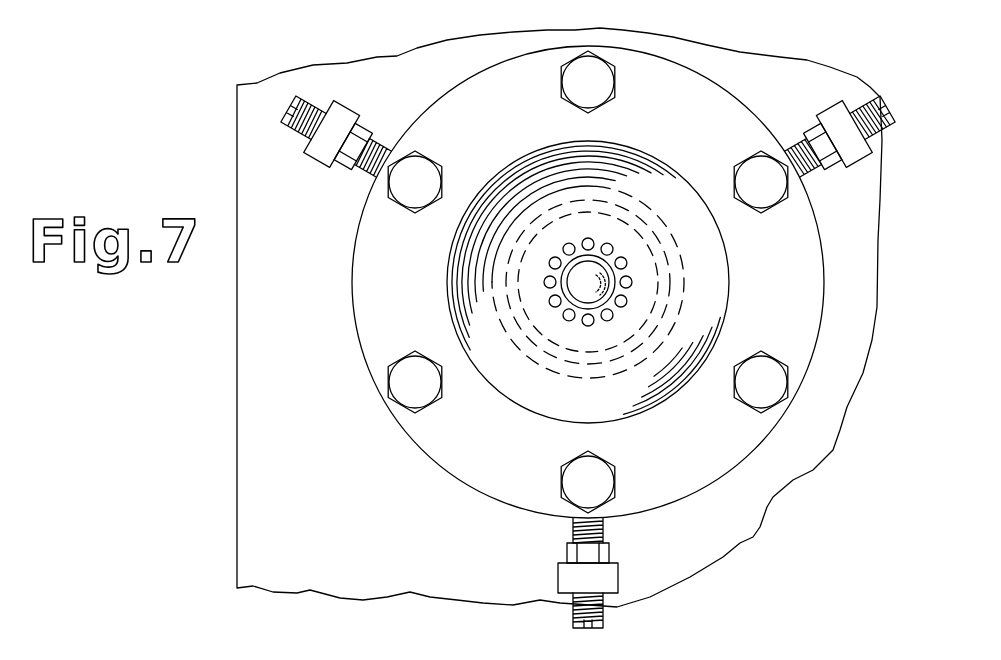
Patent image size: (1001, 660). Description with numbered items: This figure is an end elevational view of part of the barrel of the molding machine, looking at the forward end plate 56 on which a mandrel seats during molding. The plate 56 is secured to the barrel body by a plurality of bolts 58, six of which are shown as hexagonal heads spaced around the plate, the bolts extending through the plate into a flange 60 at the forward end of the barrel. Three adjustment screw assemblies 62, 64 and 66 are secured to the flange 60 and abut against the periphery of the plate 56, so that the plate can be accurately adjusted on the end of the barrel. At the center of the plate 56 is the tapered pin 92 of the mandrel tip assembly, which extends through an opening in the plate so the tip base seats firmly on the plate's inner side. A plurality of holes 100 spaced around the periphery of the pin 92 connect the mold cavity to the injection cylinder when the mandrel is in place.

The forward end plate 56 is at (385, 305).
The bolts 58 is at (425, 398).
The flange 60 is at (253, 502).
The adjustment screw assembly 62 is at (404, 83).
The adjustment screw assembly 64 is at (813, 113).
The adjustment screw assembly 66 is at (558, 576).
The tapered pin 92 is at (568, 275).
The holes 100 is at (612, 248).